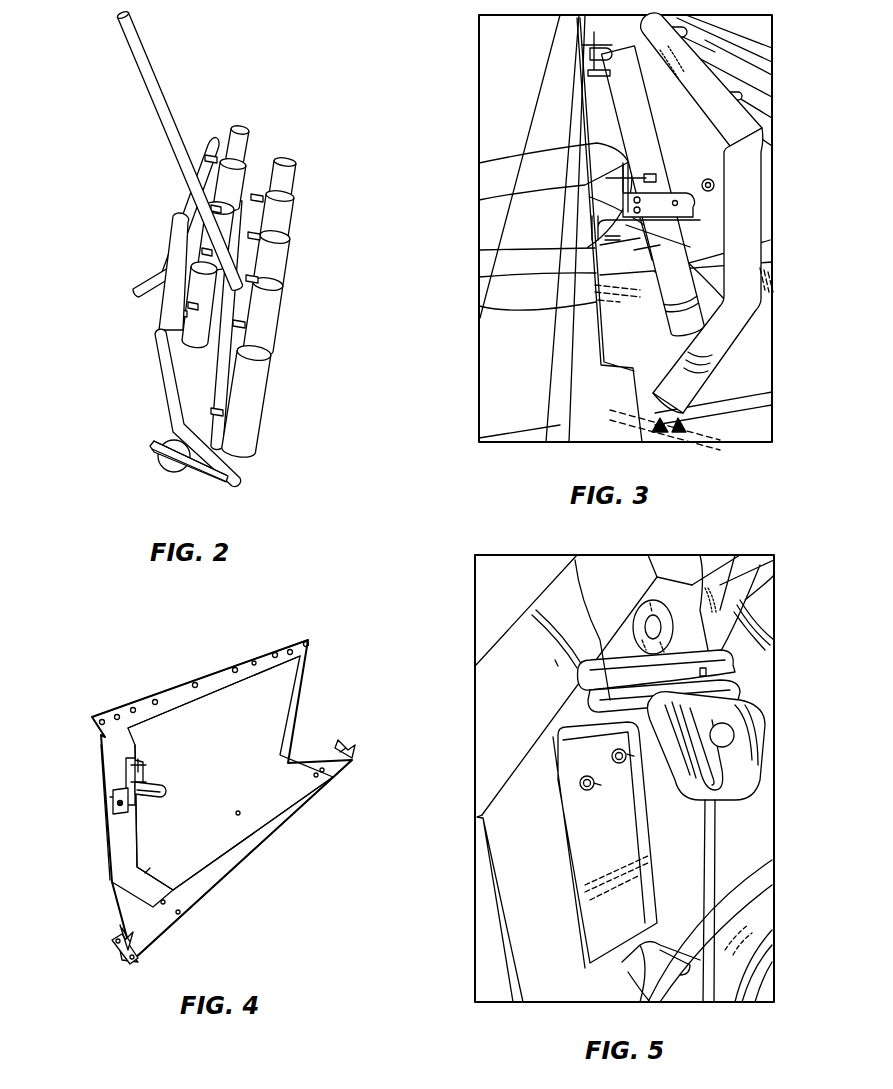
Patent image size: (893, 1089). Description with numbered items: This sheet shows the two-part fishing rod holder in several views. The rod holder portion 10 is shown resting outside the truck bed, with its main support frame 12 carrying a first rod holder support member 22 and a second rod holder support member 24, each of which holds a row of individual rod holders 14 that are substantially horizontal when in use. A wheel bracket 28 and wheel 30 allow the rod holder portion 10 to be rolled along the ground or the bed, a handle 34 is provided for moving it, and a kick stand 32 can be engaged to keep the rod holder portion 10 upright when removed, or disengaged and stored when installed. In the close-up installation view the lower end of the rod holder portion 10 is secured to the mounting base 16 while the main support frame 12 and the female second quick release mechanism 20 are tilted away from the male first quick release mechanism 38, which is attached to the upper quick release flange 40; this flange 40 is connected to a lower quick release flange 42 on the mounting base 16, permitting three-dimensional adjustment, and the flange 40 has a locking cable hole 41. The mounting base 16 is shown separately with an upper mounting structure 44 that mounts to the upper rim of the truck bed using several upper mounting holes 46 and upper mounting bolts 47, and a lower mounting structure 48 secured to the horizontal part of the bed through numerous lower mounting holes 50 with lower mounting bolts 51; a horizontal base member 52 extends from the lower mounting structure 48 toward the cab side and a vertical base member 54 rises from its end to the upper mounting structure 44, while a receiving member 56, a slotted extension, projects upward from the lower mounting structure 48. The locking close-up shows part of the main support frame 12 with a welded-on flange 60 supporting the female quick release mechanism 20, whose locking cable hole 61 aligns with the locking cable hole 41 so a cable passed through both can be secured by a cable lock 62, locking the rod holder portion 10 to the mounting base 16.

In FIG. 2, the rod holder portion 10 is at (143, 393).
In FIG. 3, the rod holder portion 10 is at (747, 370).
In FIG. 2, the main support frame 12 is at (165, 358).
In FIG. 3, the main support frame 12 is at (753, 220).
In FIG. 5, the main support frame 12 is at (518, 652).
In FIG. 2, the individual rod holders 14 is at (245, 128).
In FIG. 3, the mounting base 16 is at (593, 300).
In FIG. 4, the mounting base 16 is at (315, 698).
In FIG. 3, the second quick release mechanism 20 is at (750, 167).
In FIG. 5, the second quick release mechanism 20 is at (660, 627).
In FIG. 2, the first rod holder support member 22 is at (170, 318).
In FIG. 3, the first rod holder support member 22 is at (720, 113).
In FIG. 2, the second rod holder support member 24 is at (213, 385).
In FIG. 3, the second rod holder support member 24 is at (683, 283).
In FIG. 2, the wheel bracket 28 is at (160, 458).
In FIG. 2, the wheel 30 is at (177, 435).
In FIG. 2, the kick stand 32 is at (152, 280).
In FIG. 2, the handle 34 is at (158, 112).
In FIG. 3, the first quick release mechanism 38 is at (598, 115).
In FIG. 4, the first quick release mechanism 38 is at (147, 760).
In FIG. 3, the upper quick release flange 40 is at (700, 205).
In FIG. 4, the upper quick release flange 40 is at (133, 777).
In FIG. 5, the upper quick release flange 40 is at (737, 690).
In FIG. 3, the locking cable hole 41 is at (680, 245).
In FIG. 4, the locking cable hole 41 is at (163, 787).
In FIG. 3, the lower quick release flange 42 is at (603, 207).
In FIG. 4, the lower quick release flange 42 is at (112, 800).
In FIG. 5, the lower quick release flange 42 is at (603, 802).
In FIG. 4, the upper mounting structure 44 is at (172, 700).
In FIG. 4, the upper mounting holes 46 is at (235, 670).
In FIG. 4, the upper mounting bolts 47 is at (132, 708).
In FIG. 4, the lower mounting structure 48 is at (242, 850).
In FIG. 4, the lower mounting holes 50 is at (155, 933).
In FIG. 4, the lower mounting bolts 51 is at (122, 952).
In FIG. 4, the horizontal base member 52 is at (143, 882).
In FIG. 4, the vertical base member 54 is at (122, 848).
In FIG. 4, the receiving member 56 is at (120, 927).
In FIG. 5, the welded-on flange 60 is at (730, 660).
In FIG. 5, the locking cable hole 61 is at (737, 623).
In FIG. 5, the cable lock 62 is at (757, 745).